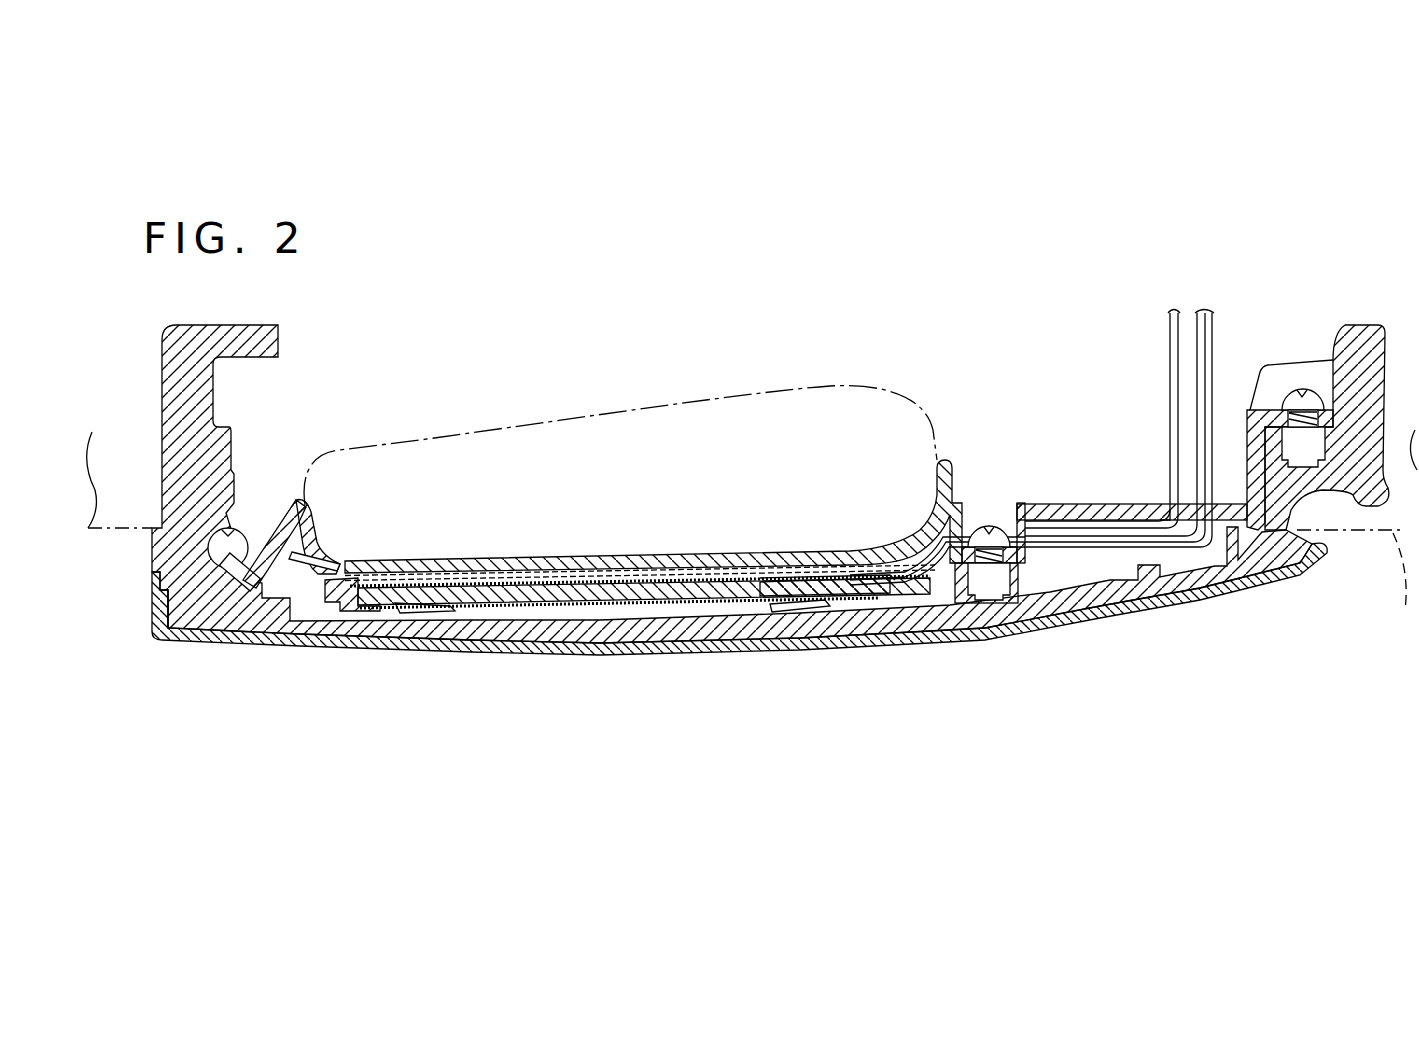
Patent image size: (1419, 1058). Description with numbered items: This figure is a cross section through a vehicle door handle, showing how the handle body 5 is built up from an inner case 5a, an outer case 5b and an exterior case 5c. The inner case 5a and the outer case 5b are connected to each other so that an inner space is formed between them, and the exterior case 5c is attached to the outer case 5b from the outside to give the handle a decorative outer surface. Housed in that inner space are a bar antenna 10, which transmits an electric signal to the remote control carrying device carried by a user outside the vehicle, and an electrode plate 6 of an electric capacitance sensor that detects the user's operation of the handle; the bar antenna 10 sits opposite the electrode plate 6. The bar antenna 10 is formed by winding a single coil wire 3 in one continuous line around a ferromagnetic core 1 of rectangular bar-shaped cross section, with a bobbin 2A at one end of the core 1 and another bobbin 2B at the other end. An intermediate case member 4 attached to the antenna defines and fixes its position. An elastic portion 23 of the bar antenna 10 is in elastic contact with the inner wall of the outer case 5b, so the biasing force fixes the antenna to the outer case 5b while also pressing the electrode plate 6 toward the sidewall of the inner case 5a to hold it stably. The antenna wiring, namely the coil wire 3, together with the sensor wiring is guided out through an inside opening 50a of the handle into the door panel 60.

The ferromagnetic core 1 is at (540, 595).
The bobbin 2A is at (860, 598).
The bobbin 2B is at (377, 604).
The coil wire 3 is at (1203, 377).
The intermediate case member 4 is at (817, 580).
The handle body 5 is at (998, 640).
The inner case 5a is at (1058, 504).
The outer case 5b is at (242, 630).
The exterior case 5c is at (1203, 610).
The electrode plate 6 is at (340, 564).
The bar antenna 10 is at (587, 604).
The elastic portion 23 is at (423, 608).
The inside opening 50a is at (1168, 500).
The door panel 60 is at (1398, 572).